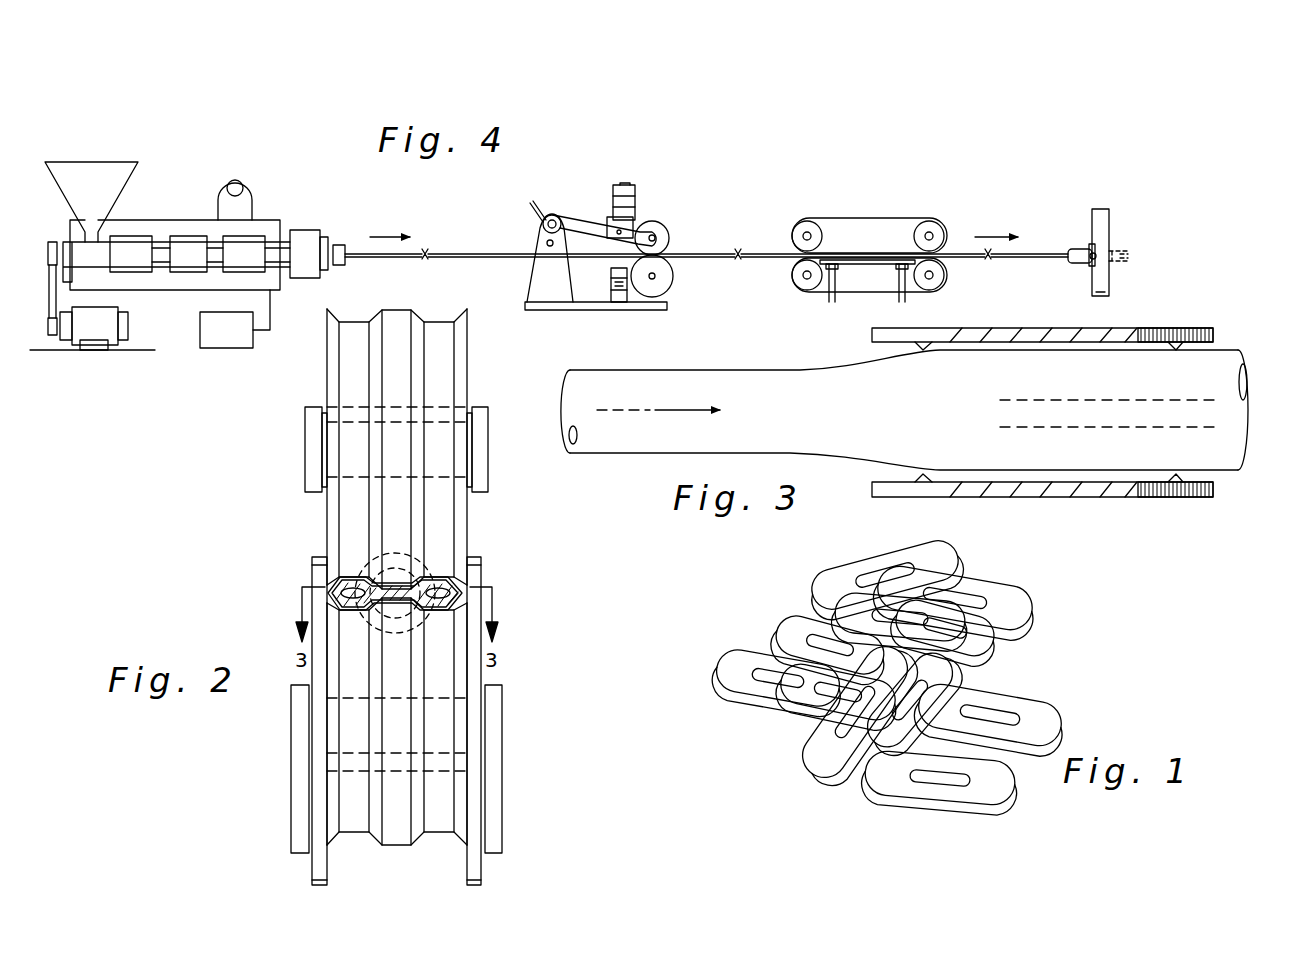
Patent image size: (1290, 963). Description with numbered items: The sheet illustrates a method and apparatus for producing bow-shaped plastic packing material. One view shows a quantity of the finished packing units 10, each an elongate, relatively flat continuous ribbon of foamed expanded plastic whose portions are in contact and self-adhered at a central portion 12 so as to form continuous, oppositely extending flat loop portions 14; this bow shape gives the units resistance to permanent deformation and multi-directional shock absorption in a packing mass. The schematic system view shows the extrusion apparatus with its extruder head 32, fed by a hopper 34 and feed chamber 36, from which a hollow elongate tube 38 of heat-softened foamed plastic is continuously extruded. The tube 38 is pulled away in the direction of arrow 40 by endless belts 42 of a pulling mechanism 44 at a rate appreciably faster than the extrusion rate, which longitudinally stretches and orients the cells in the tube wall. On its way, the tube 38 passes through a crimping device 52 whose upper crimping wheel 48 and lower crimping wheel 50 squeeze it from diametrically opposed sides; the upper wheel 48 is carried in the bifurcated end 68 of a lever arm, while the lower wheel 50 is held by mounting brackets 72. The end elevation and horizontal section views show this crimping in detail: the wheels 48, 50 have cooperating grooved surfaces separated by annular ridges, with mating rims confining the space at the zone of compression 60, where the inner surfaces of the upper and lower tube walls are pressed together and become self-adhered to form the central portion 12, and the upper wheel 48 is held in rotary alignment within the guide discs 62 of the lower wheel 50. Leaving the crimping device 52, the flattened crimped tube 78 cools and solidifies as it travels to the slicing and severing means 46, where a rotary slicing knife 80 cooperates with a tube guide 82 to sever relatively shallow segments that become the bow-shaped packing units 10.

In FIG. 1, the packing unit 10 is at (898, 671).
In FIG. 3, the central portion 12 is at (1200, 413).
In FIG. 1, the central portion 12 is at (965, 578).
In FIG. 3, the loop portions 14 is at (1228, 360).
In FIG. 1, the loop portions 14 is at (920, 548).
In FIG. 4, the extruder head 32 is at (305, 230).
In FIG. 4, the hopper 34 is at (108, 170).
In FIG. 4, the feed chamber 36 is at (183, 236).
In FIG. 4, the elongate tube 38 is at (358, 258).
In FIG. 2, the elongate tube 38 is at (432, 548).
In FIG. 3, the elongate tube 38 is at (682, 383).
In FIG. 4, the arrow 40 is at (396, 238).
In FIG. 3, the arrow 40 is at (640, 412).
In FIG. 4, the endless belts 42 is at (858, 218).
In FIG. 4, the pulling mechanism 44 is at (869, 226).
In FIG. 4, the slicing and severing means 46 is at (1112, 230).
In FIG. 4, the upper crimping wheel 48 is at (672, 236).
In FIG. 2, the upper crimping wheel 48 is at (403, 430).
In FIG. 4, the lower crimping wheel 50 is at (674, 283).
In FIG. 2, the lower crimping wheel 50 is at (482, 809).
In FIG. 3, the lower crimping wheel 50 is at (1142, 326).
In FIG. 4, the crimping device 52 is at (668, 182).
In FIG. 2, the zone of compression 60 is at (462, 580).
In FIG. 2, the guide discs 62 is at (320, 803).
In FIG. 3, the guide discs 62 is at (1215, 336).
In FIG. 2, the bifurcated end 68 is at (480, 408).
In FIG. 2, the mounting brackets 72 is at (298, 730).
In FIG. 4, the flattened crimped tube 78 is at (755, 252).
In FIG. 3, the flattened crimped tube 78 is at (1228, 347).
In FIG. 4, the rotary slicing knife 80 is at (1096, 209).
In FIG. 4, the tube guide 82 is at (1080, 249).